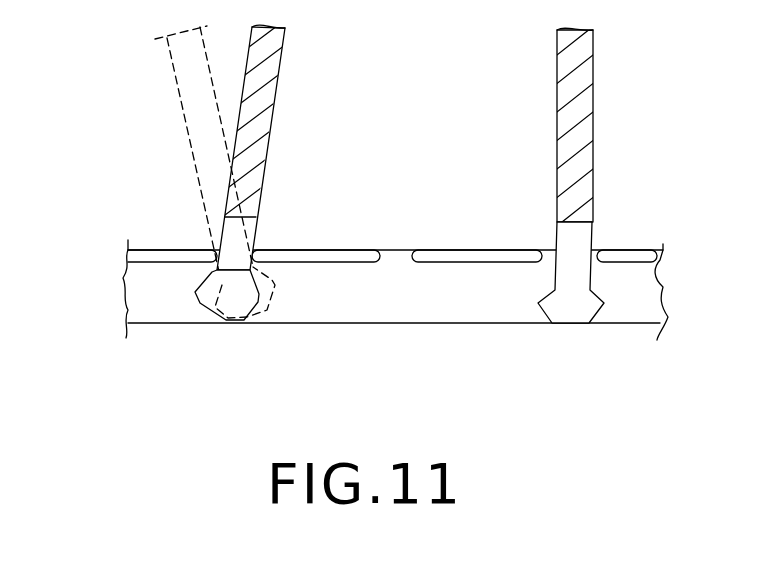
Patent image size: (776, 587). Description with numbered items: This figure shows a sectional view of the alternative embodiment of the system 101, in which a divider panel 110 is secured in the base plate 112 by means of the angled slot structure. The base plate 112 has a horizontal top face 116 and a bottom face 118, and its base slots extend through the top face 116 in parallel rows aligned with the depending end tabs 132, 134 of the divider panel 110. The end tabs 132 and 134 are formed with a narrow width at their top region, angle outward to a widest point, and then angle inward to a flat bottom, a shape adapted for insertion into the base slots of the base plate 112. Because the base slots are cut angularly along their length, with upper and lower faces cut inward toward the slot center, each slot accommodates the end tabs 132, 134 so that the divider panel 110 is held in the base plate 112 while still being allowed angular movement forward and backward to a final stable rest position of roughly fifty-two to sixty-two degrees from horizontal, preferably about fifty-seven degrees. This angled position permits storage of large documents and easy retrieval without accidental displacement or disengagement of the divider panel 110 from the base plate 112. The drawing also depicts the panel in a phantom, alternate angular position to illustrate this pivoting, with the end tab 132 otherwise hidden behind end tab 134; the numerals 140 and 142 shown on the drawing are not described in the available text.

The system 101 is at (632, 97).
The divider panel 110 is at (188, 140).
The base plate 112 is at (322, 250).
The top face 116 is at (190, 239).
The bottom face 118 is at (195, 262).
The end tab 132 is at (272, 280).
The end tab 134 is at (200, 303).
The pin shank 140 is at (555, 233).
The pin tip end 142 is at (572, 308).